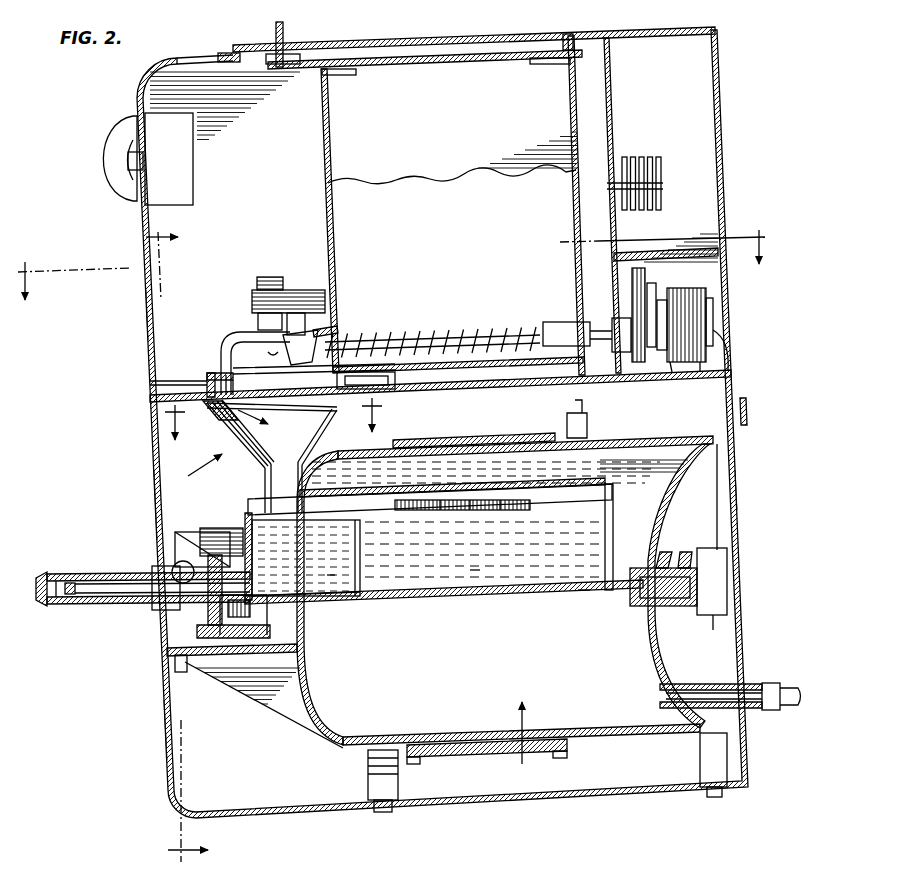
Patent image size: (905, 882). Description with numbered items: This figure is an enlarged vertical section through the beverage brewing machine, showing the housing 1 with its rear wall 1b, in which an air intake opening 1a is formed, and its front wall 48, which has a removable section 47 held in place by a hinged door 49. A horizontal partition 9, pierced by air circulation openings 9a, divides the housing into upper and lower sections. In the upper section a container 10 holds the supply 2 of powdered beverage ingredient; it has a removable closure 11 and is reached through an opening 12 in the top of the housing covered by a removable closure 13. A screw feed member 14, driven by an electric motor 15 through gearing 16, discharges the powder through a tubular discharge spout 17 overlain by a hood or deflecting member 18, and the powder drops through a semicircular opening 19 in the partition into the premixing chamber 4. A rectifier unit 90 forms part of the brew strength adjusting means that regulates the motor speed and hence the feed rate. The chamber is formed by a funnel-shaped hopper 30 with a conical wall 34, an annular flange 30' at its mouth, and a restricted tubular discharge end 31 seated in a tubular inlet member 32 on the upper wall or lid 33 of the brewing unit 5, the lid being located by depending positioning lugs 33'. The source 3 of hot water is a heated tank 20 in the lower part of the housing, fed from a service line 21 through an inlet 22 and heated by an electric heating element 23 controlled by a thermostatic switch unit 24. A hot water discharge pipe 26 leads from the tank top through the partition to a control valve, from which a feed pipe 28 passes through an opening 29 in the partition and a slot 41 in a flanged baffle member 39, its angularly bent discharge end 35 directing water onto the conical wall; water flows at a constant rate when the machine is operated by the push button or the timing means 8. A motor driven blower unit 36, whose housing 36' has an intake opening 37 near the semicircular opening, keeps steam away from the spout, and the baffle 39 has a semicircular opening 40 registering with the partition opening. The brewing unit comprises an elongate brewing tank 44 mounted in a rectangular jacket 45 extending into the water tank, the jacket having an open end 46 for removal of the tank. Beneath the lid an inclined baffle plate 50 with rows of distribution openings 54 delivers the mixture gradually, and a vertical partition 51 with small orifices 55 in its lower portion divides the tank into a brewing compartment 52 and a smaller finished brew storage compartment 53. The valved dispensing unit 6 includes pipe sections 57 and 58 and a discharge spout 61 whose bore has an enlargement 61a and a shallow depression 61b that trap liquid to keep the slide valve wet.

The housing 1 is at (146, 346).
The air intake opening 1a is at (700, 411).
The rear wall 1b is at (742, 488).
The supply of beverage forming ingredient 2 is at (418, 168).
The source of heated water 3 is at (353, 592).
The premixing chamber 4 is at (396, 348).
The brewing unit 5 is at (185, 546).
The valved dispensing unit 6 is at (148, 617).
The timing means 8 is at (105, 188).
The horizontal partition 9 is at (446, 380).
The openings 9a is at (498, 366).
The container 10 is at (330, 192).
The removable closure 11 is at (444, 62).
The opening 12 is at (290, 66).
The removable closure 13 is at (440, 44).
The screw feed member 14 is at (458, 335).
The electric motor 15 is at (678, 280).
The gearing 16 is at (632, 300).
The tubular discharge spout 17 is at (318, 336).
The hood or deflecting member 18 is at (327, 327).
The semicircular opening 19 is at (270, 423).
The heated tank 20 is at (305, 710).
The service line 21 is at (790, 688).
The inlet 22 is at (660, 706).
The electric heating element 23 is at (470, 754).
The thermostatic switch unit 24 is at (722, 580).
The hot water discharge pipe 26 is at (650, 409).
The feed pipe 28 is at (253, 333).
The opening 29 is at (230, 380).
The funnel-shaped hopper 30 is at (270, 447).
The annular flange 30' is at (178, 406).
The restricted tubular discharge end 31 is at (270, 490).
The tubular inlet member 32 is at (275, 508).
The upper wall or lid 33 is at (428, 539).
The positioning lugs 33' is at (571, 537).
The conical wall 34 is at (300, 446).
The discharge end 35 is at (236, 428).
The motor driven blower unit 36 is at (288, 287).
The blower housing 36' is at (210, 352).
The intake opening 37 is at (276, 344).
The flanged baffle member 39 is at (207, 386).
The semicircular opening 40 is at (352, 384).
The slot 41 is at (314, 351).
The elongate brewing tank 44 is at (510, 580).
The rectangular jacket 45 is at (578, 590).
The open end 46 is at (303, 620).
The removable section 47 is at (160, 503).
The front wall 48 is at (164, 720).
The hinged door 49 is at (144, 318).
The baffle plate 50 is at (392, 521).
The vertical partition 51 is at (362, 574).
The brewing compartment 52 is at (475, 572).
The finished brew storage compartment 53 is at (327, 577).
The distribution openings 54 is at (466, 516).
The orifices 55 is at (380, 596).
The pipe section 57 is at (225, 622).
The pipe section 58 is at (168, 608).
The discharge spout 61 is at (42, 610).
The enlargement 61a is at (90, 574).
The shallow depression 61b is at (120, 604).
The rectifier unit 90 is at (648, 153).